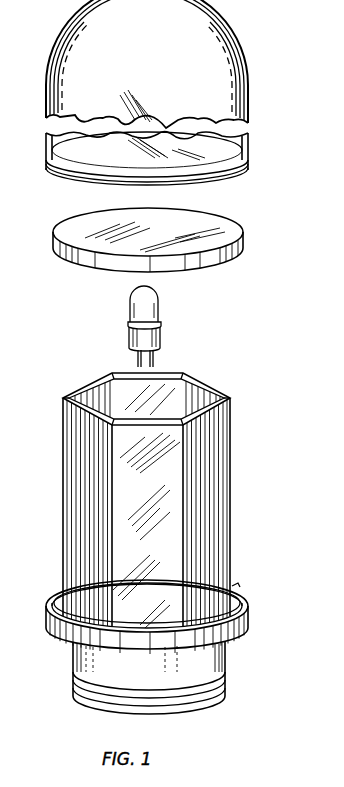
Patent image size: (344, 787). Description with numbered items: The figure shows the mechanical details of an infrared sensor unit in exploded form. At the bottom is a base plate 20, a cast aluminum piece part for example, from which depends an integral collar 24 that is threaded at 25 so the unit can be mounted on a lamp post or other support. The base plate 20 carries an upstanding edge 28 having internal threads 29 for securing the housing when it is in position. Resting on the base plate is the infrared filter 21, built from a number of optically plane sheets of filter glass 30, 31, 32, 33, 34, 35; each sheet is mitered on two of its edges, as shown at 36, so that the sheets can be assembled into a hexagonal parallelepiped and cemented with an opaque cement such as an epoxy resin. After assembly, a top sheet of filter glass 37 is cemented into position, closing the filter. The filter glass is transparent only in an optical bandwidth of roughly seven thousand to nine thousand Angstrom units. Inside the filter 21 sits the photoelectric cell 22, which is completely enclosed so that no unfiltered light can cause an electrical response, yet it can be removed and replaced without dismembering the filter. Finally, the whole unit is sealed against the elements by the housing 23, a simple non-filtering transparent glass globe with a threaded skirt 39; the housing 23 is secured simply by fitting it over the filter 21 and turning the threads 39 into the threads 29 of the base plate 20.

The base plate 20 is at (166, 607).
The infrared filter 21 is at (167, 500).
The photoelectric cell 22 is at (163, 322).
The housing 23 is at (250, 78).
The collar 24 is at (169, 677).
The threads 25 is at (228, 681).
The upstanding edge 28 is at (250, 596).
The internal threads 29 is at (236, 584).
The optically plane sheet of filter glass 30 is at (87, 513).
The optically plane sheet of filter glass 31 is at (146, 530).
The optically plane sheet of filter glass 32 is at (207, 513).
The optically plane sheet of filter glass 33 is at (94, 399).
The optically plane sheet of filter glass 34 is at (150, 399).
The optically plane sheet of filter glass 35 is at (201, 398).
The mitered edge 36 is at (232, 400).
The top sheet of filter glass 37 is at (245, 234).
The threaded skirt 39 is at (250, 158).